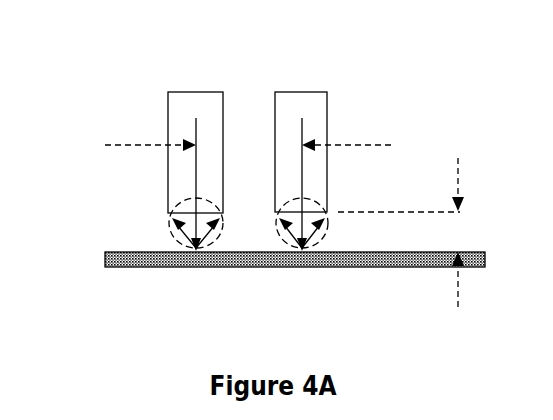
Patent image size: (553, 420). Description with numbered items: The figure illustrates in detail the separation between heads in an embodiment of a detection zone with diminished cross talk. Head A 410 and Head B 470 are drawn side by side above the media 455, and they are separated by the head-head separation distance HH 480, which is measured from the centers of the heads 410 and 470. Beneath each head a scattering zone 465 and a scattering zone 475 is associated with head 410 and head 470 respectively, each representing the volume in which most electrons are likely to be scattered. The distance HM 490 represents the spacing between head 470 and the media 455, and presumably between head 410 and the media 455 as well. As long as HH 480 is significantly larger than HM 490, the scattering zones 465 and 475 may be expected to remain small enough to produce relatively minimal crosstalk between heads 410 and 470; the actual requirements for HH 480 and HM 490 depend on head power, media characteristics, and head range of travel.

The Head A 410 is at (197, 144).
The Head B 470 is at (305, 144).
The head-head separation distance HH 480 is at (222, 161).
The scattering zone 465 is at (172, 243).
The scattering zone 475 is at (320, 205).
The media 455 is at (295, 273).
The head-media distance HM 490 is at (438, 232).